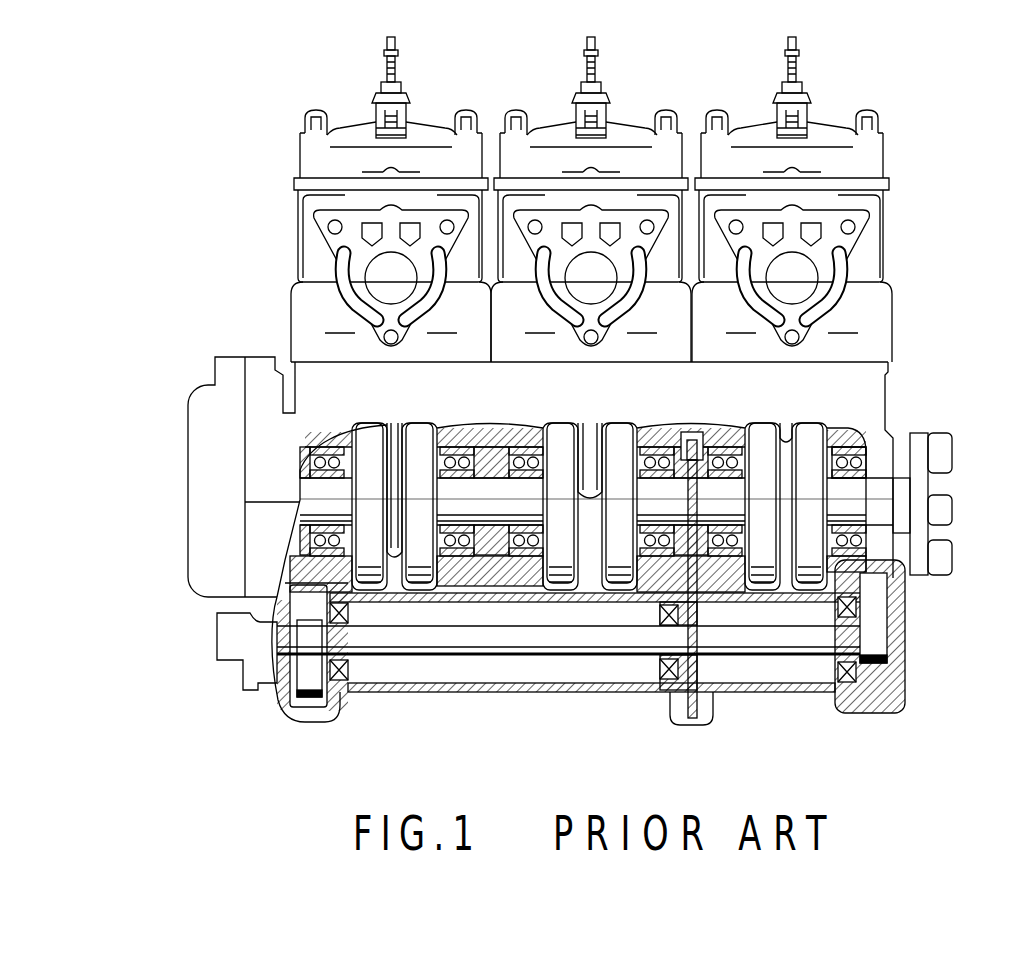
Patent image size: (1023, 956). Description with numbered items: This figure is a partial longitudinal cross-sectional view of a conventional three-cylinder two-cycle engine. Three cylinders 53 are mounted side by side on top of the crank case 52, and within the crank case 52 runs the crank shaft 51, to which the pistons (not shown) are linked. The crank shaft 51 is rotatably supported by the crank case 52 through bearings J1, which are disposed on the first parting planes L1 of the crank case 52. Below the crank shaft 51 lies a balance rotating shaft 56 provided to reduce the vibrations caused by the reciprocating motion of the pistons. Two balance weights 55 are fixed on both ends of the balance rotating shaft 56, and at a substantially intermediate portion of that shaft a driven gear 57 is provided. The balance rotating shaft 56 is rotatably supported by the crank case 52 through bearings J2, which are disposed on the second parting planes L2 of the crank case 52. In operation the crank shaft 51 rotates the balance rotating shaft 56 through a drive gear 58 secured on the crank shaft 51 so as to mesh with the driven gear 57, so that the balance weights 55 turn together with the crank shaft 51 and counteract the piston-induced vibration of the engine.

The crank shaft 51 is at (863, 500).
The crank case 52 is at (873, 399).
The cylinders 53 is at (883, 227).
The balance weights 55 is at (312, 700).
The balance rotating shaft 56 is at (537, 660).
The driven gear 57 is at (693, 715).
The drive gear 58 is at (702, 553).
The first parting planes L1 is at (268, 500).
The second parting planes L2 is at (248, 632).
The bearings J1 is at (870, 512).
The bearings J2 is at (347, 672).